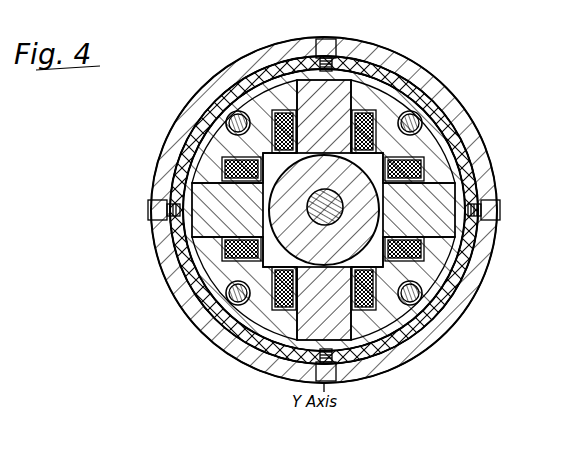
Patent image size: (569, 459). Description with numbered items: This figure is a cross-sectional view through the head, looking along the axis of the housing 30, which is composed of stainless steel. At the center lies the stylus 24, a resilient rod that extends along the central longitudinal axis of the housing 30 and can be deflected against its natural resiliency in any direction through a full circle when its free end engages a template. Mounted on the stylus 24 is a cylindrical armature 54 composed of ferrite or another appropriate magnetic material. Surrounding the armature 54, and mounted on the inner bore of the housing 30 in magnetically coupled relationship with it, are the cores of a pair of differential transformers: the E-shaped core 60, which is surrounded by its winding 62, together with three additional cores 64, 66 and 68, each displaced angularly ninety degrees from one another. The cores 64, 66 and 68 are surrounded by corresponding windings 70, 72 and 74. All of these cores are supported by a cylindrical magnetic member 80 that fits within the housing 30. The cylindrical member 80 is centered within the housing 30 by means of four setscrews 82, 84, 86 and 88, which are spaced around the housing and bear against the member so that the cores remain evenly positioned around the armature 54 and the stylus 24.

The stylus 24 is at (330, 232).
The housing 30 is at (388, 62).
The cylindrical armature 54 is at (224, 180).
The E-shaped core 60 is at (420, 82).
The winding 62 is at (290, 102).
The core 64 is at (440, 202).
The core 66 is at (340, 338).
The core 68 is at (200, 236).
The winding 70 is at (468, 166).
The winding 72 is at (252, 332).
The winding 74 is at (224, 128).
The cylindrical magnetic member 80 is at (237, 82).
The setscrew 82 is at (338, 46).
The setscrew 84 is at (500, 214).
The setscrew 86 is at (314, 372).
The setscrew 88 is at (148, 208).